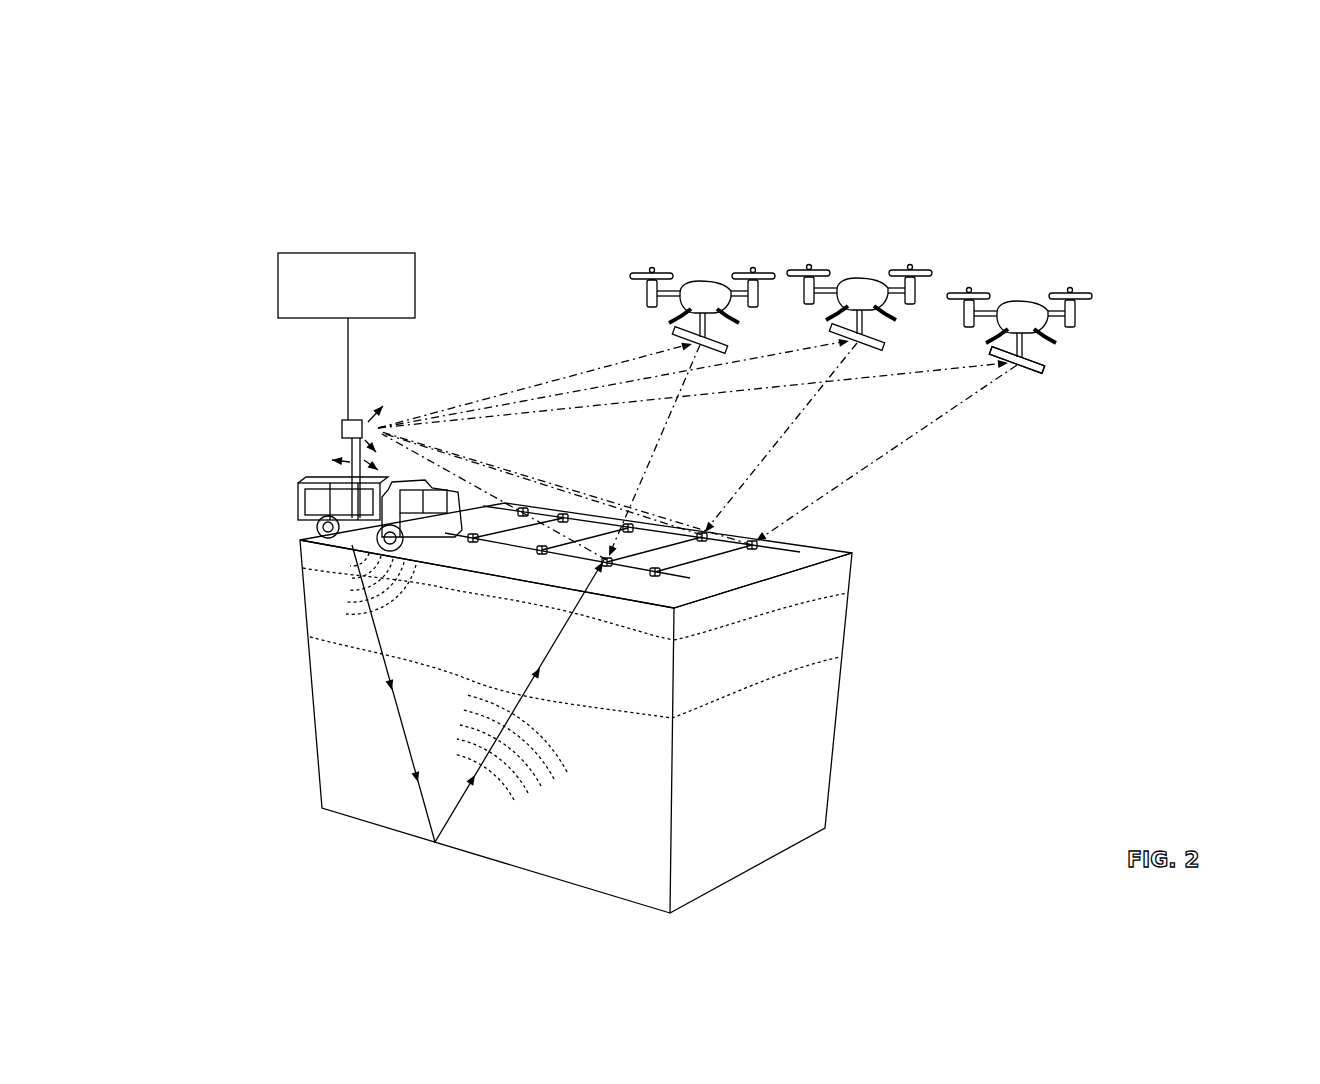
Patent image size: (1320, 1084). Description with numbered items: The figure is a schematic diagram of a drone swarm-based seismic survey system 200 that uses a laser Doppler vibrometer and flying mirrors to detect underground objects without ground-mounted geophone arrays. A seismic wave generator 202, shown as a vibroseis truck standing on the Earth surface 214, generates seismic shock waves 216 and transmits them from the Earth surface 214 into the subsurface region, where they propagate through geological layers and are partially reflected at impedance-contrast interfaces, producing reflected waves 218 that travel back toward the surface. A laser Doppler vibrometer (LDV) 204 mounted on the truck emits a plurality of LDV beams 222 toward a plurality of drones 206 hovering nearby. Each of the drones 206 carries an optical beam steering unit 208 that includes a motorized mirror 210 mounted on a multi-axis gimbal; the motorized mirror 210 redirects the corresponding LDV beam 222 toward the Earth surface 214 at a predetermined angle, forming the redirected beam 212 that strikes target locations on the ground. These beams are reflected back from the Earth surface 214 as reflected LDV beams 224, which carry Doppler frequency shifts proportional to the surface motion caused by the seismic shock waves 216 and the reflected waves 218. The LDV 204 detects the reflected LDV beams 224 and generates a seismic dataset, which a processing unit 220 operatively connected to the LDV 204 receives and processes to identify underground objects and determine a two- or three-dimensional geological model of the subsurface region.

The seismic survey system 200 is at (360, 113).
The seismic wave generator 202 is at (303, 480).
The laser Doppler vibrometer (LDV) 204 is at (362, 416).
The drones 206 is at (703, 284).
The optical beam steering unit 208 is at (1032, 353).
The motorized mirror 210 is at (1022, 377).
The redirected beam 212 is at (915, 510).
The Earth surface 214 is at (315, 550).
The seismic shock waves 216 is at (392, 692).
The reflected waves 218 is at (616, 556).
The processing unit 220 is at (346, 253).
The LDV beams 222 is at (650, 352).
The reflected LDV beams 224 is at (497, 468).